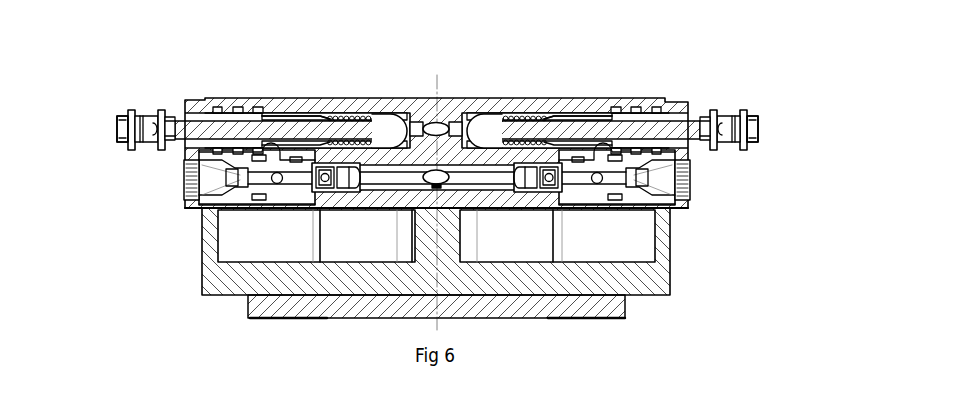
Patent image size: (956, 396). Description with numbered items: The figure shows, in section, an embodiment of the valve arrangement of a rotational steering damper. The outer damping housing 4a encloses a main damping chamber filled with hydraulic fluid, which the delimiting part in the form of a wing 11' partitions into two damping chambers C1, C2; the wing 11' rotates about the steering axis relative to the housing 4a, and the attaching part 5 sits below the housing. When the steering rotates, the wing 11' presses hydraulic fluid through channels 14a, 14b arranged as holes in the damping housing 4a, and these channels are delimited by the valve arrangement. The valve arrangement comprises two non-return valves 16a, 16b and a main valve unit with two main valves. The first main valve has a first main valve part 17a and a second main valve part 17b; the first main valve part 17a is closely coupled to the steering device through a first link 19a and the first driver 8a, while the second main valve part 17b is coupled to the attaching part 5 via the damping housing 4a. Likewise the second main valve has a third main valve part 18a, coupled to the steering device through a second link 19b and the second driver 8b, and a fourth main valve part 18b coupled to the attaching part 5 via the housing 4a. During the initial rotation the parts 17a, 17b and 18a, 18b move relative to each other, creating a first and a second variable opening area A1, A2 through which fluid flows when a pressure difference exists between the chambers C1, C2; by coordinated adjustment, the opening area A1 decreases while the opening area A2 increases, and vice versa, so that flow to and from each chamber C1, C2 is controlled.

The damping housing 4a is at (348, 105).
The attaching part 5 is at (278, 305).
The first driver 8a is at (125, 130).
The second driver 8b is at (758, 115).
The wing 11' is at (469, 259).
The channel 14a is at (422, 173).
The channel 14b is at (475, 115).
The non-return valve 16a is at (217, 190).
The non-return valve 16b is at (677, 193).
The first main valve part 17a is at (283, 130).
The second main valve part 17b is at (218, 115).
The third main valve part 18a is at (607, 125).
The fourth main valve part 18b is at (655, 115).
The first link 19a is at (145, 113).
The second link 19b is at (732, 110).
The first variable opening area A1 is at (293, 117).
The second variable opening area A2 is at (582, 113).
The first damping chamber C1 is at (257, 233).
The second damping chamber C2 is at (623, 222).